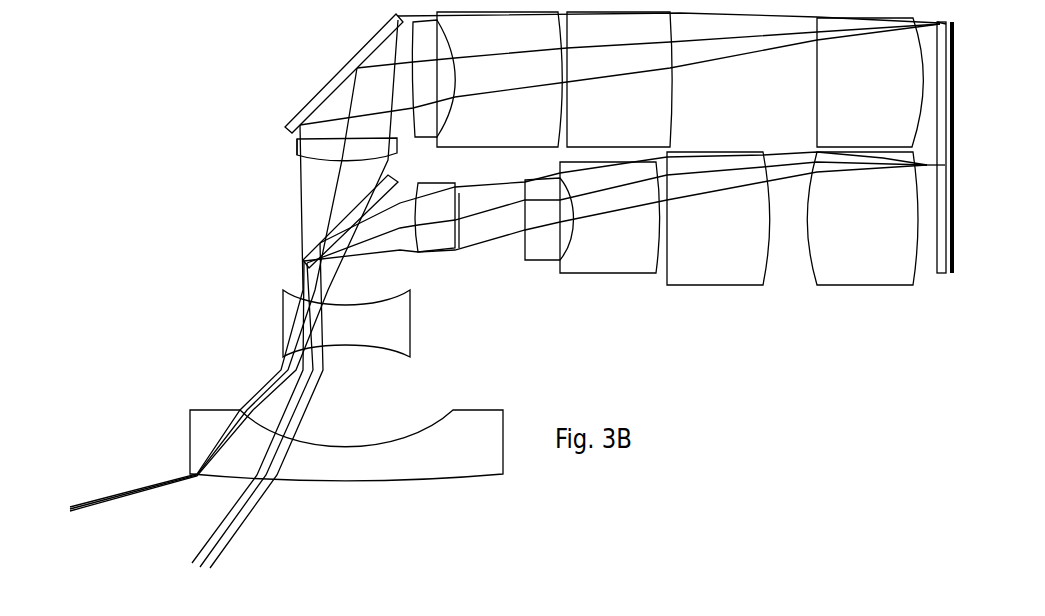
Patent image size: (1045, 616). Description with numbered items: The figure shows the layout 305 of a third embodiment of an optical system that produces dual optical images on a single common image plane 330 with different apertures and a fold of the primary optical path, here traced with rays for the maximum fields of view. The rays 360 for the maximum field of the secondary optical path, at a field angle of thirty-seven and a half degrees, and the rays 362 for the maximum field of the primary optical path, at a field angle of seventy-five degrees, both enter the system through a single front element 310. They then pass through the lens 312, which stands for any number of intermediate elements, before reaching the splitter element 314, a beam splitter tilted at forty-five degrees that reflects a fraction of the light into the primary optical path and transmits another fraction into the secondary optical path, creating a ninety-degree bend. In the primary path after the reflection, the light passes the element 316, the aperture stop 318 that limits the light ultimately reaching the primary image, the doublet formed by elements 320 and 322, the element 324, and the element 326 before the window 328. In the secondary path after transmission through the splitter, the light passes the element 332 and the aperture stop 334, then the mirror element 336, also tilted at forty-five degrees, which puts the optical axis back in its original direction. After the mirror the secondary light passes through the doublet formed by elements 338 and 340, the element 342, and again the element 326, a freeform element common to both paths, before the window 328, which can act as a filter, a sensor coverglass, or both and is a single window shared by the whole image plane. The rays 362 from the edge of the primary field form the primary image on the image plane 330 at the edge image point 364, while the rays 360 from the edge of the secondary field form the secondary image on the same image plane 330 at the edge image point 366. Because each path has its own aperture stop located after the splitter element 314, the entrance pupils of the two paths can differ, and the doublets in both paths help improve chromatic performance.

The layout 305 is at (159, 120).
The single front element 310 is at (346, 445).
The lens 312 is at (346, 323).
The splitter element 314 is at (347, 221).
The element 316 is at (435, 217).
The aperture stop 318 is at (459, 249).
The element 320 is at (549, 219).
The element 322 is at (610, 217).
The element 324 is at (718, 218).
The element 326 is at (862, 218).
The window 328 is at (946, 159).
The common image plane 330 is at (953, 240).
The element 332 is at (347, 150).
The aperture stop 334 is at (297, 140).
The mirror element 336 is at (344, 73).
The element 338 is at (433, 78).
The element 340 is at (500, 79).
The element 342 is at (619, 79).
The rays 360 is at (257, 405).
The rays 362 is at (234, 274).
The edge image point 364 is at (945, 165).
The edge image point 366 is at (961, 23).